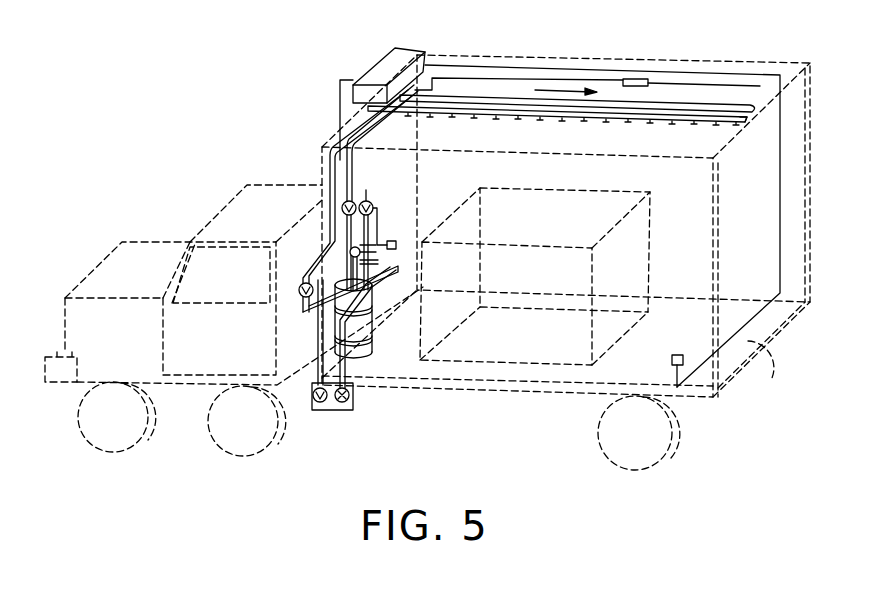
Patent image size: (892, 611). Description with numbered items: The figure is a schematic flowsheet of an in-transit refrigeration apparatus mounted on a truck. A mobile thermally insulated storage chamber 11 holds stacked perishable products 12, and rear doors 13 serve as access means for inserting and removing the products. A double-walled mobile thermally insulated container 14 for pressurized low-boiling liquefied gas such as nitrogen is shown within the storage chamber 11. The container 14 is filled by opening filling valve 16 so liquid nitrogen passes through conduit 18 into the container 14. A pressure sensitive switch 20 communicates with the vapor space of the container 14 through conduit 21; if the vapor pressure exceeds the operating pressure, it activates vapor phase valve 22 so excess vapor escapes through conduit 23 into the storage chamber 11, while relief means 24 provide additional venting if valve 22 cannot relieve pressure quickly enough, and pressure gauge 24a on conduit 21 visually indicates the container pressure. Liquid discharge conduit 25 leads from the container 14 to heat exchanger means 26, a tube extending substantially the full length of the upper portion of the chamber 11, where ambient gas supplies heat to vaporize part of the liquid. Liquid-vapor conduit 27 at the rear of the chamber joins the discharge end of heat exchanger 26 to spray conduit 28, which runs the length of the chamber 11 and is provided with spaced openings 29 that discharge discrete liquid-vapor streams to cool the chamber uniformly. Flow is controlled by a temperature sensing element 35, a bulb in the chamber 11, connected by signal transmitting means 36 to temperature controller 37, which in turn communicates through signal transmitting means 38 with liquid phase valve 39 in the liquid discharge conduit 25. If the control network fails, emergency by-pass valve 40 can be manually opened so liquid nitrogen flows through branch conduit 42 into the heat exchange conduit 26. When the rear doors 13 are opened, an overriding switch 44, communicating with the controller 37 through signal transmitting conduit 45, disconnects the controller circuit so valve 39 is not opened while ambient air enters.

The mobile thermally insulated storage chamber 11 is at (500, 392).
The perishable products 12 is at (648, 244).
The rear doors 13 is at (800, 178).
The double-walled mobile thermally insulated container 14 is at (354, 348).
The filling valve 16 is at (318, 401).
The conduit 18 is at (323, 338).
The pressure sensitive switch 20 is at (350, 253).
The conduit 21 is at (379, 263).
The vapor phase valve 22 is at (371, 202).
The conduit 23 is at (378, 228).
The relief means 24 is at (396, 245).
The pressure gauge 24a is at (342, 410).
The liquid discharge conduit 25 is at (365, 133).
The heat exchanger means 26 is at (507, 99).
The liquid-vapor conduit 27 is at (740, 114).
The spray conduit 28 is at (503, 113).
The openings 29 is at (610, 114).
The temperature sensing element 35 is at (648, 85).
The signal transmitting means 36 is at (545, 79).
The temperature controller 37 is at (383, 62).
The signal transmitting means 38 is at (340, 110).
The liquid phase valve 39 is at (353, 200).
The emergency by-pass valve 40 is at (305, 283).
The branch conduit 42 is at (330, 167).
The switch 44 is at (672, 361).
The signal transmitting conduit 45 is at (622, 67).